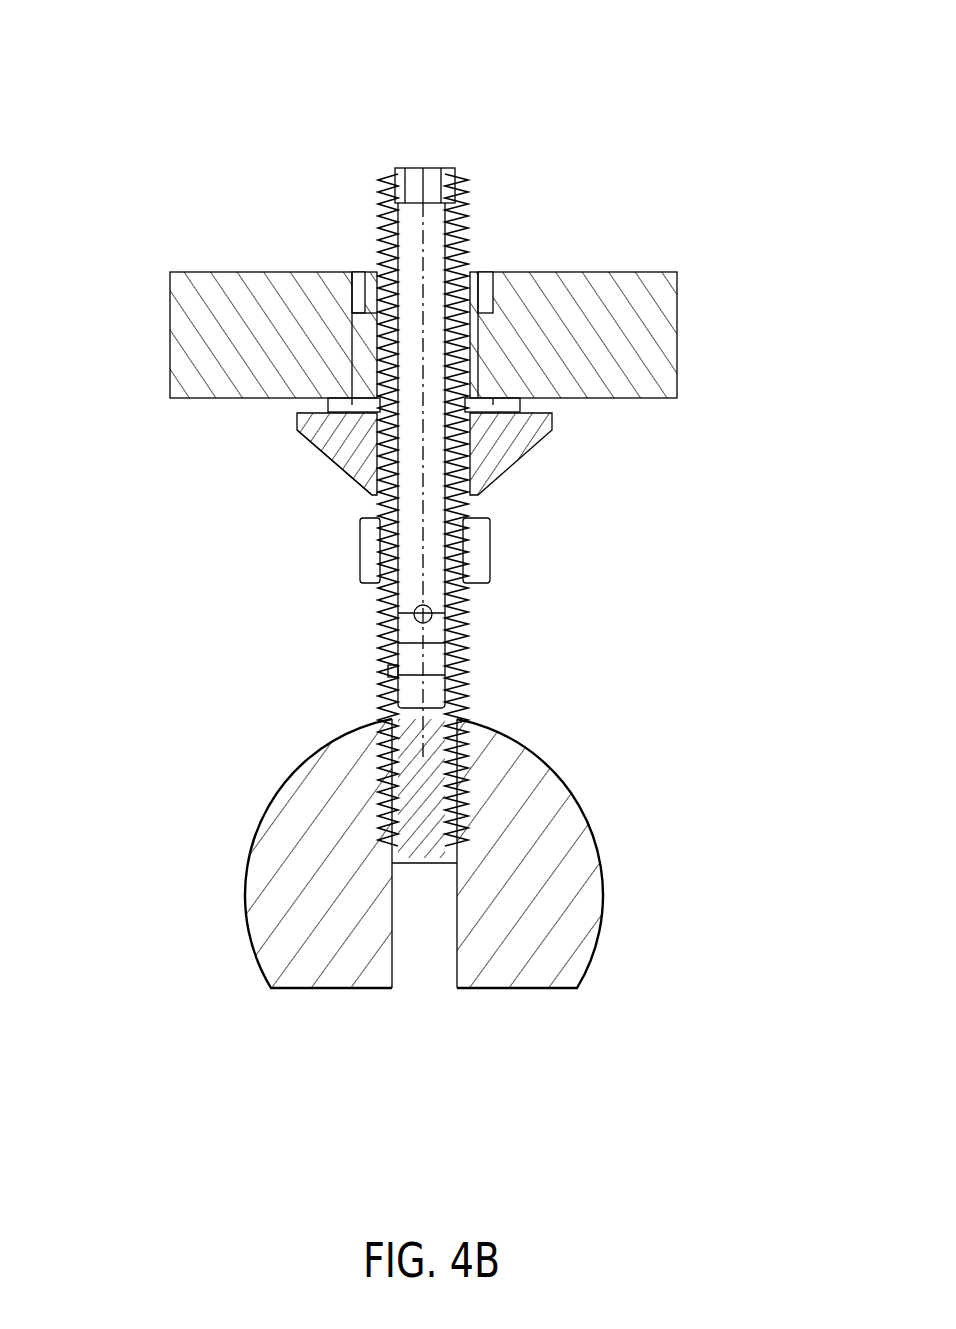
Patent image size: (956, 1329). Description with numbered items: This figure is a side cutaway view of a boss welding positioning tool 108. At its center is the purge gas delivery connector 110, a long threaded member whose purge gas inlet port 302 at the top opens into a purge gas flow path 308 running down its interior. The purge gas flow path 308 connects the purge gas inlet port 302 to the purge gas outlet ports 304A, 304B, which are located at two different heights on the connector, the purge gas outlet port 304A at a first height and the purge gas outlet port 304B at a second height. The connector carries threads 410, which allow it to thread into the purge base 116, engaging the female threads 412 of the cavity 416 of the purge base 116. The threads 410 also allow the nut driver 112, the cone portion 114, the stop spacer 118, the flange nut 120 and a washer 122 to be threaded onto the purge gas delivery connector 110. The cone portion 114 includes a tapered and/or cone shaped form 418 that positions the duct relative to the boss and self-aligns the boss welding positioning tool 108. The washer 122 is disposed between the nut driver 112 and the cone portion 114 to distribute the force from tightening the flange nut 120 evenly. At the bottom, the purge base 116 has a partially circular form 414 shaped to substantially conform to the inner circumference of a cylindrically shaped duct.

The boss welding positioning tool 108 is at (182, 80).
The purge gas delivery connector 110 is at (440, 441).
The nut driver 112 is at (660, 270).
The cone portion 114 is at (326, 460).
The purge base 116 is at (427, 870).
The stop spacer 118 is at (490, 567).
The flange nut 120 is at (370, 270).
The washer 122 is at (470, 404).
The purge gas inlet port 302 is at (445, 167).
The purge gas outlet port 304A is at (433, 619).
The purge gas outlet port 304B is at (452, 670).
The purge gas flow path 308 is at (425, 512).
The threads 410 is at (383, 198).
The female threads 412 is at (468, 813).
The partially circular form 414 is at (295, 762).
The cavity 416 is at (427, 960).
The tapered and/or cone shaped form 418 is at (352, 482).